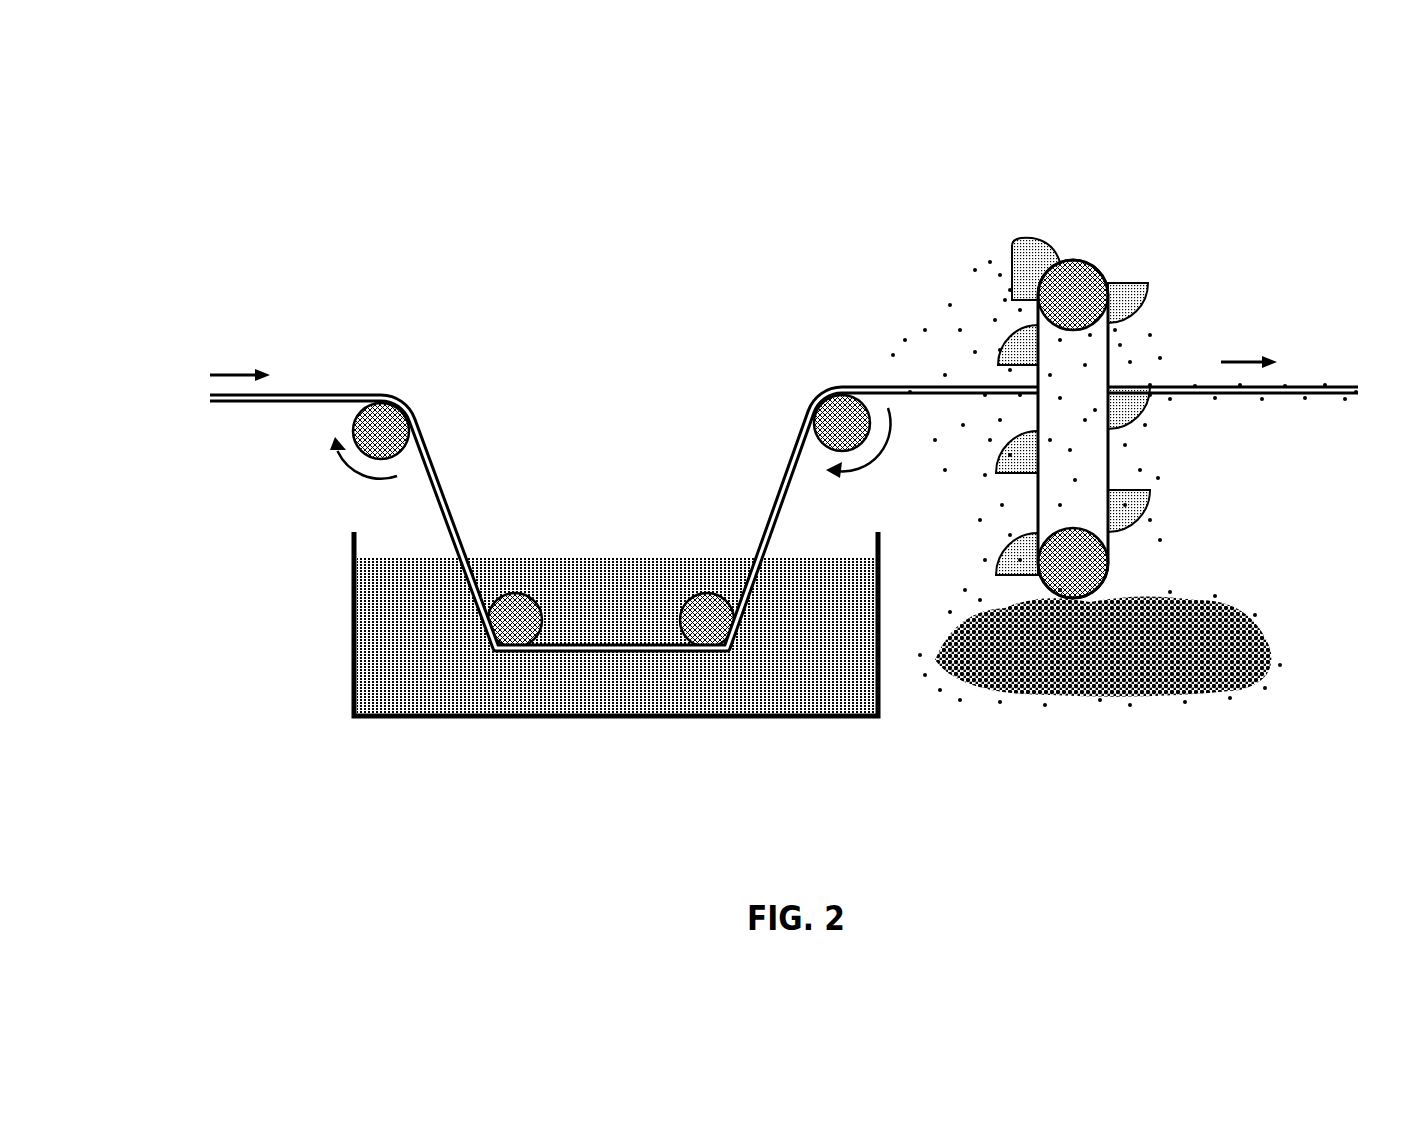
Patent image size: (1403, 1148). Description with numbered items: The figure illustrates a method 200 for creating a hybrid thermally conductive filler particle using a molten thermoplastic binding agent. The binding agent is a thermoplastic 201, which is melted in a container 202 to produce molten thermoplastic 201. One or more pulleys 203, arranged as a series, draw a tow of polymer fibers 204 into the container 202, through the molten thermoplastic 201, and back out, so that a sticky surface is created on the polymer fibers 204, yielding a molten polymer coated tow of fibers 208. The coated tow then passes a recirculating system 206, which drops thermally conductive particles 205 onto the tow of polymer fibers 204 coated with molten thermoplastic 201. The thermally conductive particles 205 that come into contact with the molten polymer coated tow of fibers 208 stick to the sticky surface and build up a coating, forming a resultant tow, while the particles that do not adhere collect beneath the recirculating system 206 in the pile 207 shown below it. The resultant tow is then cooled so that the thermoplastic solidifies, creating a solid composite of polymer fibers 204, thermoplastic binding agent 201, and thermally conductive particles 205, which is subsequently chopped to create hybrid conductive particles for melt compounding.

The method 200 is at (446, 180).
The thermoplastic 201 is at (592, 590).
The container 202 is at (350, 582).
The pulleys 203 is at (386, 428).
The tow of polymer fibers 204 is at (290, 393).
The thermally conductive particles 205 is at (948, 305).
The recirculating system 206 is at (1085, 290).
The collected particle pile 207 is at (1200, 604).
The molten polymer coated tow of fibers 208 is at (1307, 383).